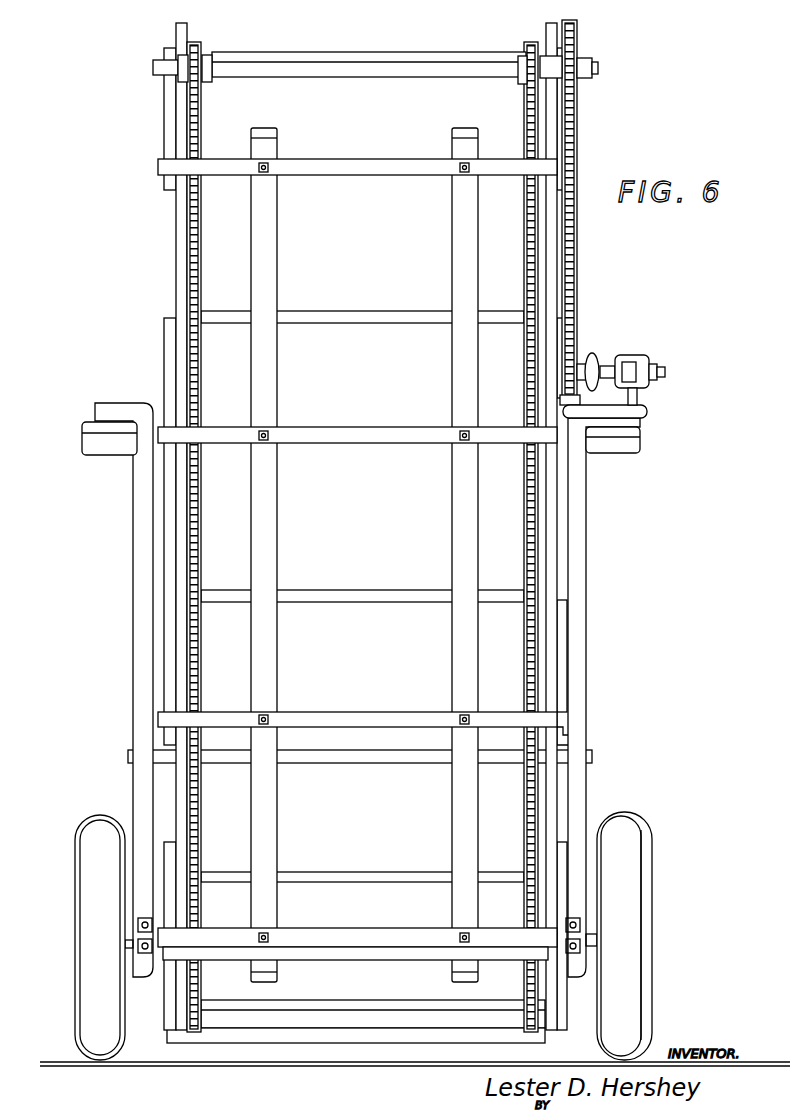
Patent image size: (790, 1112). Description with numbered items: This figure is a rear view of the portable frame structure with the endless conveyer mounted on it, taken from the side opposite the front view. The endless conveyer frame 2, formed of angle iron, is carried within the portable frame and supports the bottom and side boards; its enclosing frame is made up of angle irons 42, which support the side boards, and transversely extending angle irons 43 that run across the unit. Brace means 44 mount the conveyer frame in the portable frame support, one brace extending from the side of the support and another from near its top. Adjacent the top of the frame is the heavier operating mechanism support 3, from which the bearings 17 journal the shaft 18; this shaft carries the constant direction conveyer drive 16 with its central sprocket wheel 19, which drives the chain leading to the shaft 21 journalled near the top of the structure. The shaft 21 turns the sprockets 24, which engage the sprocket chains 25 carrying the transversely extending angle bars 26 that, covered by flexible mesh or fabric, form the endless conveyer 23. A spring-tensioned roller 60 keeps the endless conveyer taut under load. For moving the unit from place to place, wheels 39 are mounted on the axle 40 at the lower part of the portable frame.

The endless conveyer frame 2 is at (320, 93).
The operating mechanism support 3 is at (122, 452).
The constant direction conveyer drive 16 is at (592, 357).
The bearings 17 is at (630, 352).
The shaft 18 is at (670, 372).
The central sprocket wheel 19 is at (650, 410).
The shaft 21 is at (415, 62).
The endless conveyer 23 is at (585, 62).
The sprockets 24 is at (208, 66).
The sprocket chains 25 is at (186, 232).
The transversely extending angle bars 26 is at (340, 316).
The wheels 39 is at (85, 866).
The axle 40 is at (322, 935).
The angle irons 42 is at (165, 120).
The transversely extending angle irons 43 is at (343, 167).
The brace means 44 is at (345, 766).
The roller 60 is at (322, 1037).